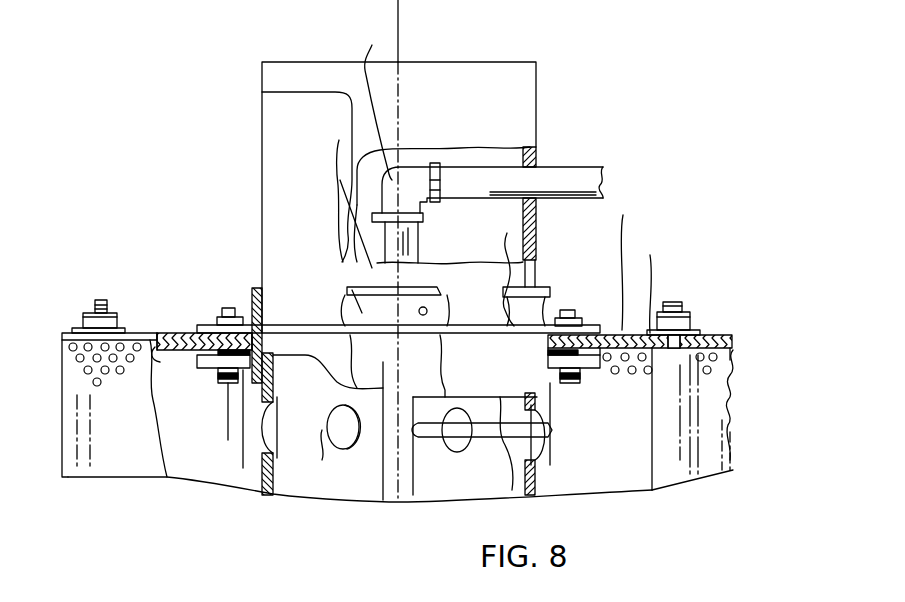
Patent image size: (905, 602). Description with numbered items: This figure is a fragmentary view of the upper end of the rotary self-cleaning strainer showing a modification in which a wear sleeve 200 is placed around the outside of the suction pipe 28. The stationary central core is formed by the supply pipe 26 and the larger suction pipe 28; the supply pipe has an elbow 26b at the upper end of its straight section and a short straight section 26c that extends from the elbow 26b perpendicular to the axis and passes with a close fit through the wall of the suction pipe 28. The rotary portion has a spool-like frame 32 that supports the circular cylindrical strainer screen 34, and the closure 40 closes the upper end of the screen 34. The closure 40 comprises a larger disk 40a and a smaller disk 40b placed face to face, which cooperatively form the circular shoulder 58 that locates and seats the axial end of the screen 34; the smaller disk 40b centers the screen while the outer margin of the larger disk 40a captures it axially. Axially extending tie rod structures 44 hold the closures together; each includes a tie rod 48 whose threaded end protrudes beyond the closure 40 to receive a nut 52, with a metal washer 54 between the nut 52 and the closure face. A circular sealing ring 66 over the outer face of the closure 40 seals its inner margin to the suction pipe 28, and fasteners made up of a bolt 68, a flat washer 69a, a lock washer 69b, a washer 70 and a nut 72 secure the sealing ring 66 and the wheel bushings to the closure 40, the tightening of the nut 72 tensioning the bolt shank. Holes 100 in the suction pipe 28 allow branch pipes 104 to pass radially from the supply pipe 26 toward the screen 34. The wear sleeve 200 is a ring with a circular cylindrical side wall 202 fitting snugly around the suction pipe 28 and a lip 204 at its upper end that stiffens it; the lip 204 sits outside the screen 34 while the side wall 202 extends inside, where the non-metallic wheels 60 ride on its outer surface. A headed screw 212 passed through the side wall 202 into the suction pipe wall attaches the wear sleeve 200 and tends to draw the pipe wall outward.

The supply pipe 26 is at (262, 93).
The elbow 26b is at (372, 45).
The short straight section 26c is at (480, 187).
The suction pipe 28 is at (262, 63).
The spool-like frame 32 is at (732, 345).
The strainer screen 34 is at (733, 410).
The closure 40 is at (136, 333).
The circular disk 40a is at (623, 215).
The circular disk 40b is at (193, 333).
The tie rod structure 44 is at (90, 296).
The tie rod 48 is at (675, 303).
The nut 52 is at (700, 319).
The metal washer 54 is at (640, 258).
The circular shoulder 58 is at (165, 333).
The wheel 60 is at (200, 357).
The sealing ring 66 is at (507, 233).
The bolt 68 is at (228, 440).
The flat washer 69a is at (243, 468).
The lock washer 69b is at (218, 374).
The washer 70 is at (262, 298).
The nut 72 is at (236, 308).
The hole 100 is at (275, 428).
The branch pipe 104 is at (513, 397).
The wear sleeve 200 is at (340, 325).
The side wall 202 is at (383, 470).
The lip 204 is at (339, 140).
The headed screw 212 is at (423, 307).